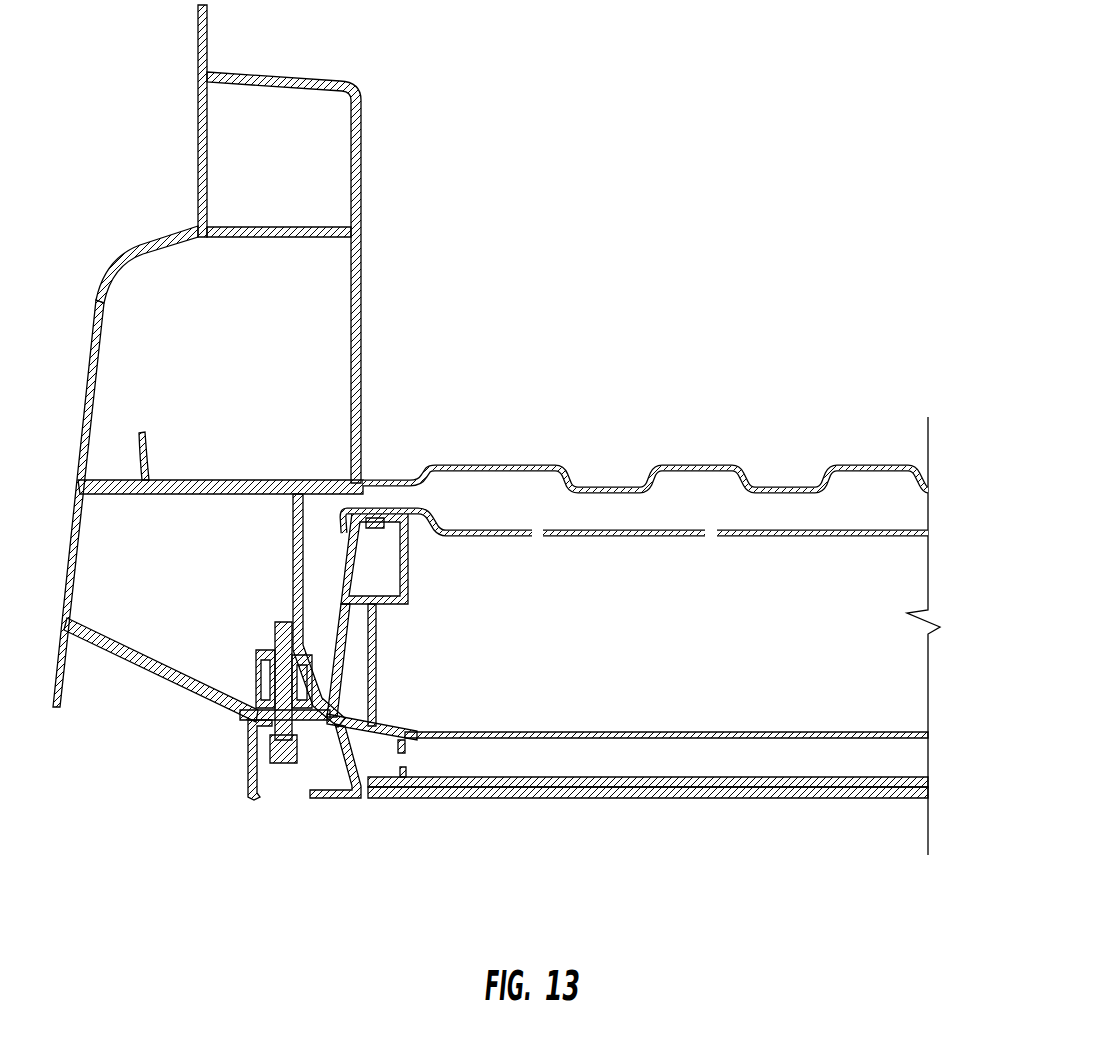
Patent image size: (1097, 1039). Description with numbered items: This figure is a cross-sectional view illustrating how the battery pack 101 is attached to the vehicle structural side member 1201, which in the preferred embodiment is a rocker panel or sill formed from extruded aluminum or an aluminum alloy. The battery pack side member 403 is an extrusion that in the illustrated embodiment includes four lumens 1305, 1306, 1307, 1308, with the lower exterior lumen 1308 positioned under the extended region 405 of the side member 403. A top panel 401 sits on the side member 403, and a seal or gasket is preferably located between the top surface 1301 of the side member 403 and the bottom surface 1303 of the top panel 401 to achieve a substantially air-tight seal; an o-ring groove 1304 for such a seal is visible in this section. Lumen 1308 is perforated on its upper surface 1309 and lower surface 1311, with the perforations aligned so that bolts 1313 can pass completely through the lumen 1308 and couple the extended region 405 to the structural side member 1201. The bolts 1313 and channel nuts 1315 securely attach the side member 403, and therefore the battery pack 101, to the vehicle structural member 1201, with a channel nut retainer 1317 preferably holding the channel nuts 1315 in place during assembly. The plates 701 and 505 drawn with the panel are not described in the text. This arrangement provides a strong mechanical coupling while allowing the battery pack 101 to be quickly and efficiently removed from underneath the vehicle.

The vehicle structural side member 1201 is at (147, 214).
The side member 403 is at (320, 553).
The o-ring groove 1304 is at (359, 497).
The bottom surface of the top panel 1303 is at (380, 518).
The corrugated top plate 701 is at (433, 468).
The top panel 401 is at (513, 530).
The top surface of side member 1301 is at (398, 526).
The lumen 1305 is at (392, 576).
The lumen 1306 is at (360, 665).
The battery pack 101 is at (733, 636).
The channel nut retainer 1317 is at (260, 682).
The channel nut 1315 is at (270, 665).
The upper surface of lumen 1309 is at (258, 711).
The extended region of side member 405 is at (250, 732).
The bolt 1313 is at (283, 763).
The lower exterior lumen 1308 is at (299, 784).
The lower surface of lumen 1311 is at (320, 800).
The lumen 1307 is at (384, 785).
The bottom plate 505 is at (548, 798).